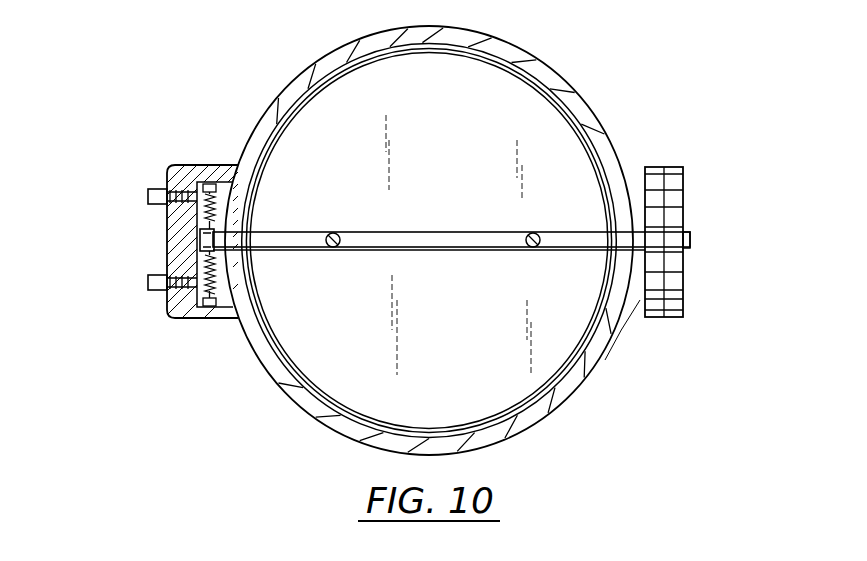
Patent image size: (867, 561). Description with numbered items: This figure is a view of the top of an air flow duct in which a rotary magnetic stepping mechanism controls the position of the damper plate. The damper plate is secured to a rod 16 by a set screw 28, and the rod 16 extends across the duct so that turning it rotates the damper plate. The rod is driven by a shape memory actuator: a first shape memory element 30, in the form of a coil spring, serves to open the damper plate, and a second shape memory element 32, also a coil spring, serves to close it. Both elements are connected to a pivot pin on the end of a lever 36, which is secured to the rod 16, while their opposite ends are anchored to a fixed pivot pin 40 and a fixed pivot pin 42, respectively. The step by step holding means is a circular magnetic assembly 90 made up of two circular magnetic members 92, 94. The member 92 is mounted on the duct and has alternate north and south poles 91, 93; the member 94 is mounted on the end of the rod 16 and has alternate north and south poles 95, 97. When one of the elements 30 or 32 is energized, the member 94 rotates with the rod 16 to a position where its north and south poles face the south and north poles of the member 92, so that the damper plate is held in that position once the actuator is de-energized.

The rod 16 is at (446, 231).
The set screw 28 is at (344, 210).
The shape memory element 30 is at (206, 210).
The shape memory element 32 is at (205, 268).
The lever 36 is at (200, 245).
The fixed pivot pin 40 is at (148, 195).
The fixed pivot pin 42 is at (148, 294).
The circular magnetic assembly 90 is at (713, 267).
The north poles 91 is at (660, 318).
The circular magnetic member 92 is at (652, 166).
The south poles 93 is at (645, 302).
The circular magnetic member 94 is at (677, 165).
The north poles 95 is at (683, 184).
The south poles 97 is at (683, 200).